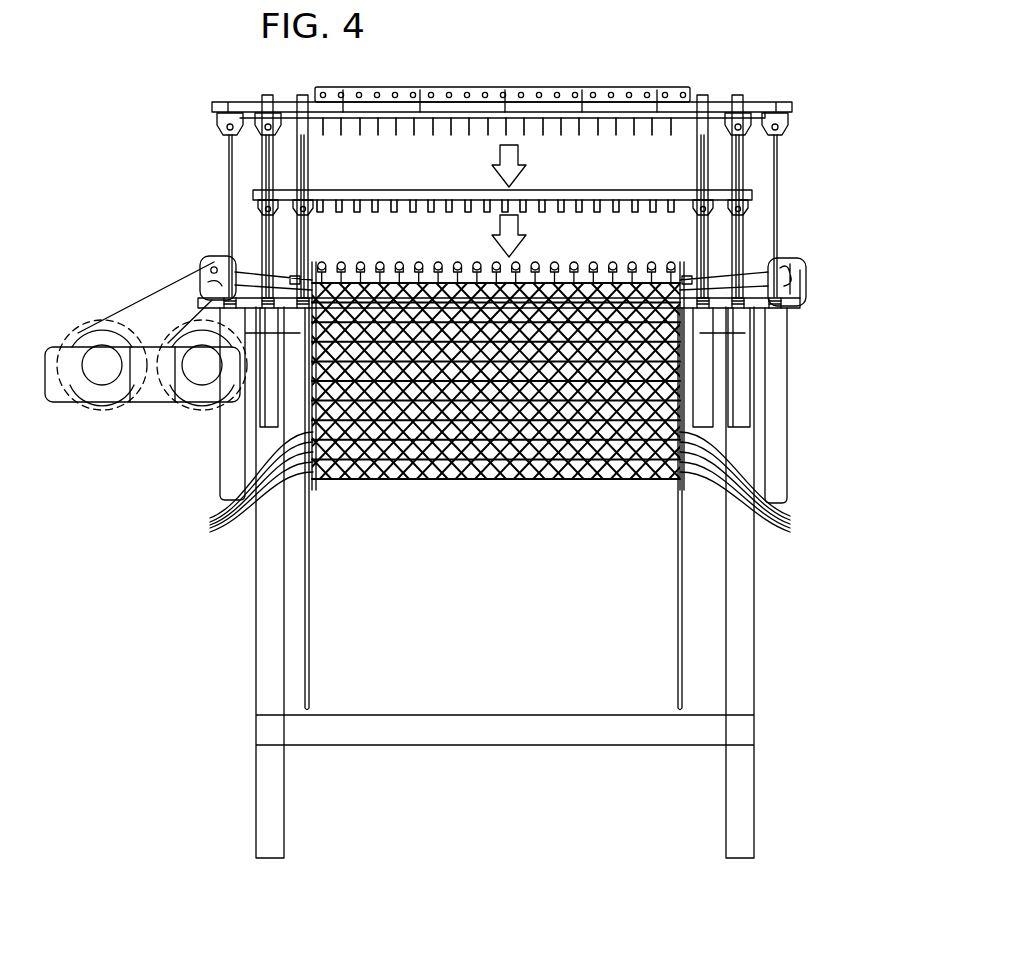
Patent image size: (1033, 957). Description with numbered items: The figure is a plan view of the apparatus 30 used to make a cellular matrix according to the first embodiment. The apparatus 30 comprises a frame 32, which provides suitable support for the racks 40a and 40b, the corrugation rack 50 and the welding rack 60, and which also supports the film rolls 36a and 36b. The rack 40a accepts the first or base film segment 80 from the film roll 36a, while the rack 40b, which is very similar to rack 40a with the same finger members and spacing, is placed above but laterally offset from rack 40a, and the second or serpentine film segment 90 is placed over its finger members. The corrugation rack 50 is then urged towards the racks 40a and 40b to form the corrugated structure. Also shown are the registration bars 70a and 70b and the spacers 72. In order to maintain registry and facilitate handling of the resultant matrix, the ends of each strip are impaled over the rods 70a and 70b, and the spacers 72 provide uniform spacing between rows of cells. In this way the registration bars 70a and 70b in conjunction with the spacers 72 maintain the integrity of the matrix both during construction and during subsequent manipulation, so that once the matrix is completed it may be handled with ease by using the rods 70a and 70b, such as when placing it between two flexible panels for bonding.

The apparatus 30 is at (521, 791).
The frame 32 is at (745, 655).
The film roll 36a is at (100, 372).
The film roll 36b is at (202, 375).
The rack 40a is at (715, 300).
The rack 40b is at (690, 262).
The corrugation rack 50 is at (622, 190).
The welding rack 60 is at (630, 96).
The registration bar 70a is at (310, 528).
The registration bar 70b is at (679, 548).
The spacers 72 is at (495, 483).
The first or base film segment 80 is at (198, 270).
The second or serpentine film segment 90 is at (140, 300).